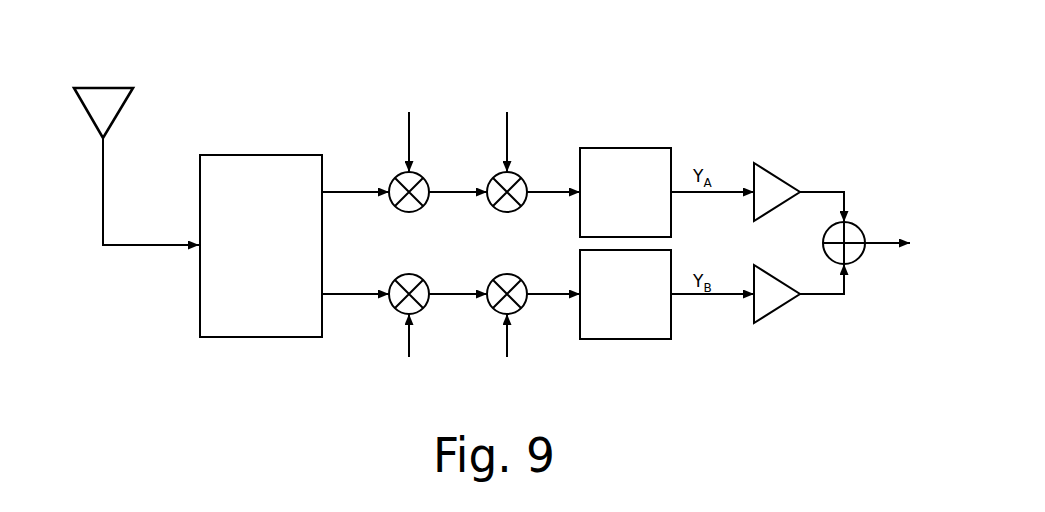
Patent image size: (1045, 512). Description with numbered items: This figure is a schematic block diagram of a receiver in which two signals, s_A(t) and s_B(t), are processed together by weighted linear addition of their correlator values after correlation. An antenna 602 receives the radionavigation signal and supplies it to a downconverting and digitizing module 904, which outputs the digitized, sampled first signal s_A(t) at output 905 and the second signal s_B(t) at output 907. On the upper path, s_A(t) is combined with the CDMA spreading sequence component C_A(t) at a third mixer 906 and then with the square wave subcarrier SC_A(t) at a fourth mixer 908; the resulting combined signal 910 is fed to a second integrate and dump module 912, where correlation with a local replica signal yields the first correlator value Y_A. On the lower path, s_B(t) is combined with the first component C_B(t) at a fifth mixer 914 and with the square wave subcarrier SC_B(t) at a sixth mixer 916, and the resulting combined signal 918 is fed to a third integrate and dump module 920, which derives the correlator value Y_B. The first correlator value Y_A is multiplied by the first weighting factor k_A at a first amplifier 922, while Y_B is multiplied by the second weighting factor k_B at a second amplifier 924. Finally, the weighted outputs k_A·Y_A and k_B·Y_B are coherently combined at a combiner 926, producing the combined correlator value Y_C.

The antenna 602 is at (134, 89).
The downconverting and digitizing module 904 is at (270, 155).
The digitized signal s_A(t) output 905 is at (324, 188).
The third mixer 906 is at (423, 172).
The digitized signal s_B(t) output 907 is at (324, 290).
The fourth mixer 908 is at (521, 172).
The combined signal 910 is at (563, 188).
The second integrate and dump module 912 is at (645, 148).
The fifth mixer 914 is at (410, 274).
The sixth mixer 916 is at (509, 274).
The combined signal 918 is at (540, 300).
The third integrate and dump module 920 is at (627, 339).
The first amplifier 922 is at (773, 172).
The second amplifier 924 is at (770, 317).
The combiner 926 is at (857, 225).